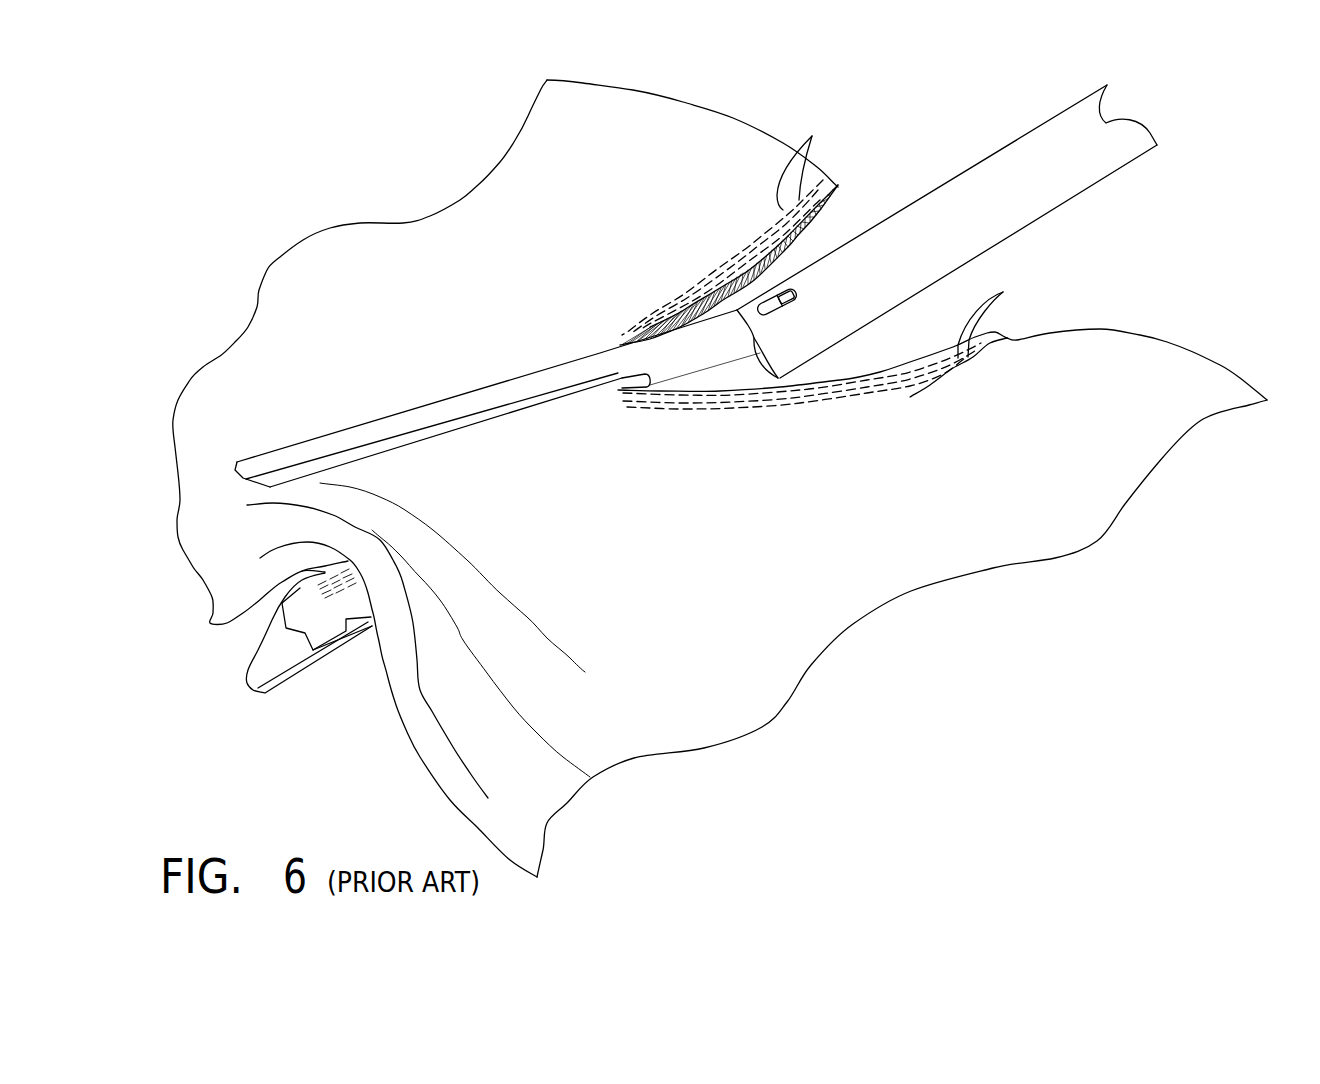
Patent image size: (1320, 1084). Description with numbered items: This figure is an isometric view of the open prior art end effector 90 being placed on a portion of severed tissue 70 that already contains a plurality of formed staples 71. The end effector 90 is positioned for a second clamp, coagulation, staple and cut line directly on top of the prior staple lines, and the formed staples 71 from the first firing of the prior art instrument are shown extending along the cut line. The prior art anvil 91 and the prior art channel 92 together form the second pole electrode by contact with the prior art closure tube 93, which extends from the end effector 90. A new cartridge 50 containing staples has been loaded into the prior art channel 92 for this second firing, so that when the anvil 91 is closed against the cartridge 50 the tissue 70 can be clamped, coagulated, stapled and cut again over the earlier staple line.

The cartridge 50 is at (291, 680).
The tissue 70 is at (792, 523).
The formed staples 71 is at (812, 136).
The prior art end effector 90 is at (678, 424).
The prior art anvil 91 is at (500, 398).
The prior art channel 92 is at (336, 660).
The prior art closure tube 93 is at (1070, 180).